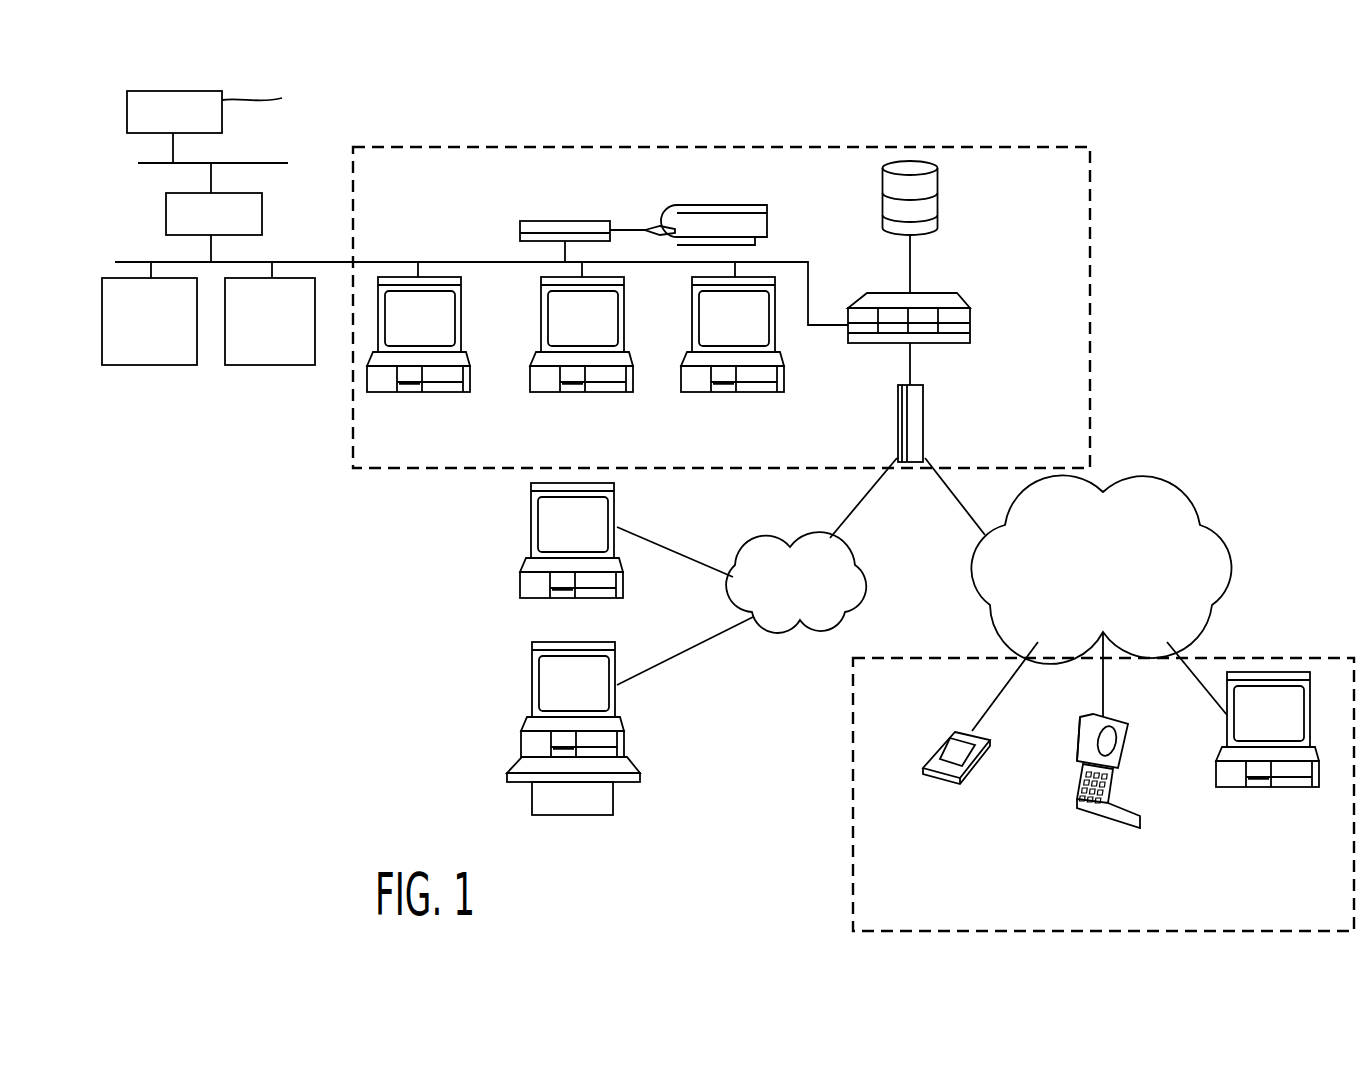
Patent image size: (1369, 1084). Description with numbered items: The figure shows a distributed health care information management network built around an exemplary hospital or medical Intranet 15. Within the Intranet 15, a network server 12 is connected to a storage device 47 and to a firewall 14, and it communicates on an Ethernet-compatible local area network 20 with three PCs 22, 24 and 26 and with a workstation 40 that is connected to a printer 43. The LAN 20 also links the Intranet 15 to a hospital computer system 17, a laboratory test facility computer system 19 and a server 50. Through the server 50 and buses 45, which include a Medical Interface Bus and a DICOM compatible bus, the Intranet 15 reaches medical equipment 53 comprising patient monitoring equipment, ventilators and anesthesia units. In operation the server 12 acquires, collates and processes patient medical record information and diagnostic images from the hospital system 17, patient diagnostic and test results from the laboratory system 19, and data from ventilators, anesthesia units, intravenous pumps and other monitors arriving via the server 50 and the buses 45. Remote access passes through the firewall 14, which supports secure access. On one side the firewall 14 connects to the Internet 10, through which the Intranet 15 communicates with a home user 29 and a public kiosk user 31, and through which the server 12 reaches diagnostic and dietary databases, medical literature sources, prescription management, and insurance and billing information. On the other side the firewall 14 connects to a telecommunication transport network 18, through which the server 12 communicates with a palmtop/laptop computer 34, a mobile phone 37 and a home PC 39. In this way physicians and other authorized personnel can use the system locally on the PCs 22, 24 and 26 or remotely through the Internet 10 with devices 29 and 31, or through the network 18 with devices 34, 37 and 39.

The Internet 10 is at (800, 626).
The network server 12 is at (970, 325).
The firewall 14 is at (923, 421).
The Intranet 15 is at (631, 209).
The hospital computer system 17 is at (169, 365).
The telecommunication network 18 is at (1238, 568).
The laboratory test facility computer system 19 is at (272, 365).
The local area network 20 is at (323, 262).
The PC 22 is at (418, 392).
The PC 24 is at (582, 392).
The PC 26 is at (735, 392).
The home user 29 is at (531, 532).
The public kiosk user 31 is at (532, 674).
The palmtop/laptop computer 34 is at (947, 784).
The mobile phone 37 is at (1102, 820).
The home user PC 39 is at (1277, 788).
The workstation 40 is at (520, 231).
The printer 43 is at (727, 205).
The buses 45 is at (222, 163).
The storage device 47 is at (883, 203).
The server 50 is at (166, 210).
The medical equipment 53 is at (127, 113).